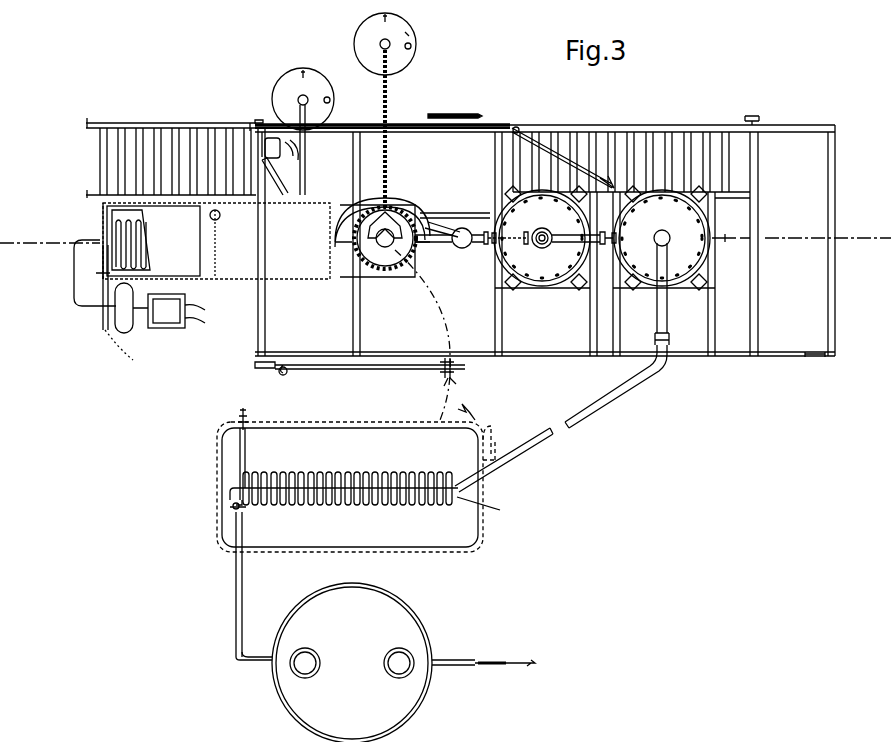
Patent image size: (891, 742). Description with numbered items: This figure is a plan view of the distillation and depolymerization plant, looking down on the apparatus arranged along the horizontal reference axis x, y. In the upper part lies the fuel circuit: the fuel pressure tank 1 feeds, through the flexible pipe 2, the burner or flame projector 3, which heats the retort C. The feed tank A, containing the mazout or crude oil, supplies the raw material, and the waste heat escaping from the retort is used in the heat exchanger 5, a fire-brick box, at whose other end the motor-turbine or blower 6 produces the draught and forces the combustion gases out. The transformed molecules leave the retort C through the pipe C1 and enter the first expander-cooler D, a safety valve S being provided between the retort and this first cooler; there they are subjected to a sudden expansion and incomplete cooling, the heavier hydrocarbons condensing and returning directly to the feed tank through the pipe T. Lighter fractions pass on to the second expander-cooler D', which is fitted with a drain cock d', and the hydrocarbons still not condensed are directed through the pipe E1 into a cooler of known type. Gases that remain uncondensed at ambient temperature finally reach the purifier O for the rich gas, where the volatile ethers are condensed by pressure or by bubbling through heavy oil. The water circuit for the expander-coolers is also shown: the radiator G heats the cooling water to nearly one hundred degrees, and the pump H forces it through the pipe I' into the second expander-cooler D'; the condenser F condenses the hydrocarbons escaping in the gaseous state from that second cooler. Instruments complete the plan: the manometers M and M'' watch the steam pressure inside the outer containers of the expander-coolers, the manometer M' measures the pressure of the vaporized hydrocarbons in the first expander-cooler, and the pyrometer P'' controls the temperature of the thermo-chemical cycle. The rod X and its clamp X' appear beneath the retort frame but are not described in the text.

The fuel pressure tank 1 is at (410, 28).
The flexible pipe 2 is at (388, 112).
The burner 3 is at (398, 213).
The feed tank A is at (315, 85).
The pump H is at (270, 128).
The water pipe I' is at (563, 136).
The radiator G is at (112, 228).
The heat exchanger 5 is at (190, 272).
The motor-turbine 6 is at (170, 320).
The axis x is at (50, 233).
The axis y is at (828, 225).
The pipe T is at (425, 220).
The safety valve S is at (465, 212).
The retort C is at (387, 260).
The pipe C1 is at (440, 255).
The manometer M is at (451, 272).
The manometer M' is at (512, 281).
The manometer M'' is at (610, 274).
The first expander-cooler D is at (547, 258).
The second expander-cooler D' is at (665, 254).
The drain cock d' is at (731, 253).
The pyrometer P'' is at (691, 290).
The rod X is at (360, 386).
The rod clamp X' is at (433, 389).
The condenser F is at (275, 435).
The pipe E1 is at (612, 398).
The purifier O is at (409, 620).